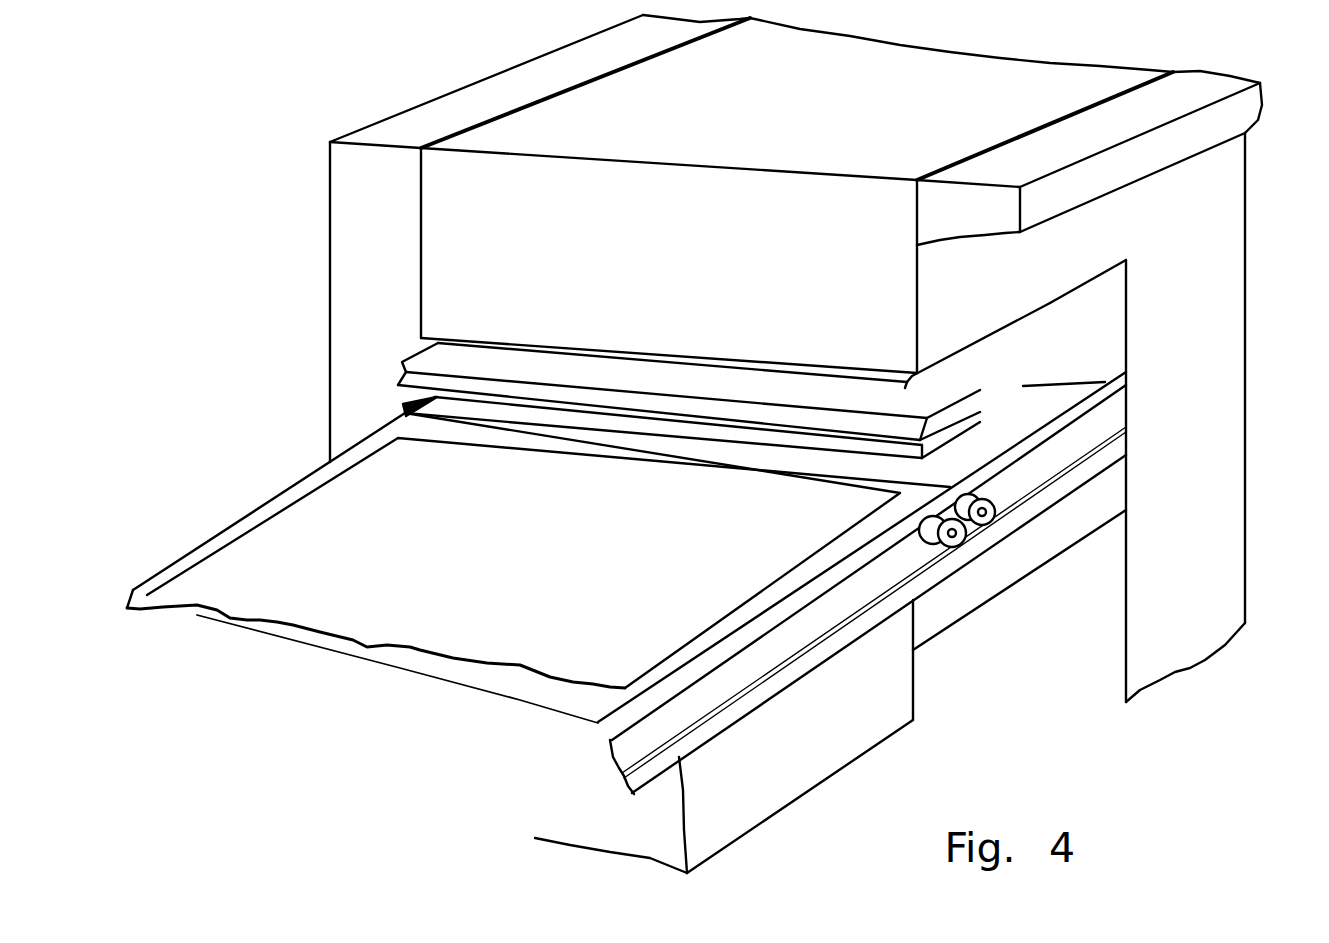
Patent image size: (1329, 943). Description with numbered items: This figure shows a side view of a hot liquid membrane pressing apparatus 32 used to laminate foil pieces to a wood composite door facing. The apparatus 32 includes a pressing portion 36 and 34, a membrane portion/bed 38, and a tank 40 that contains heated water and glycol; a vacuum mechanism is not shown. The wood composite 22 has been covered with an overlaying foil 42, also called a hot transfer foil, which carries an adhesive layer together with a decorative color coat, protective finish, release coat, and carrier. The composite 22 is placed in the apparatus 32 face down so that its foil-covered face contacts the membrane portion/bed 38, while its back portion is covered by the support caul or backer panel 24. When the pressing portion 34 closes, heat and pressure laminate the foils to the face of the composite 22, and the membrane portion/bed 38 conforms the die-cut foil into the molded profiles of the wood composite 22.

The wood composite 22 is at (410, 390).
The support caul or backer panel 24 is at (423, 363).
The hot liquid membrane pressing apparatus 32 is at (1252, 300).
The pressing portion 34 is at (653, 279).
The pressing portion 36 is at (423, 340).
The membrane portion/bed 38 is at (1000, 430).
The tank 40 is at (972, 578).
The overlaying foil 42 is at (527, 567).